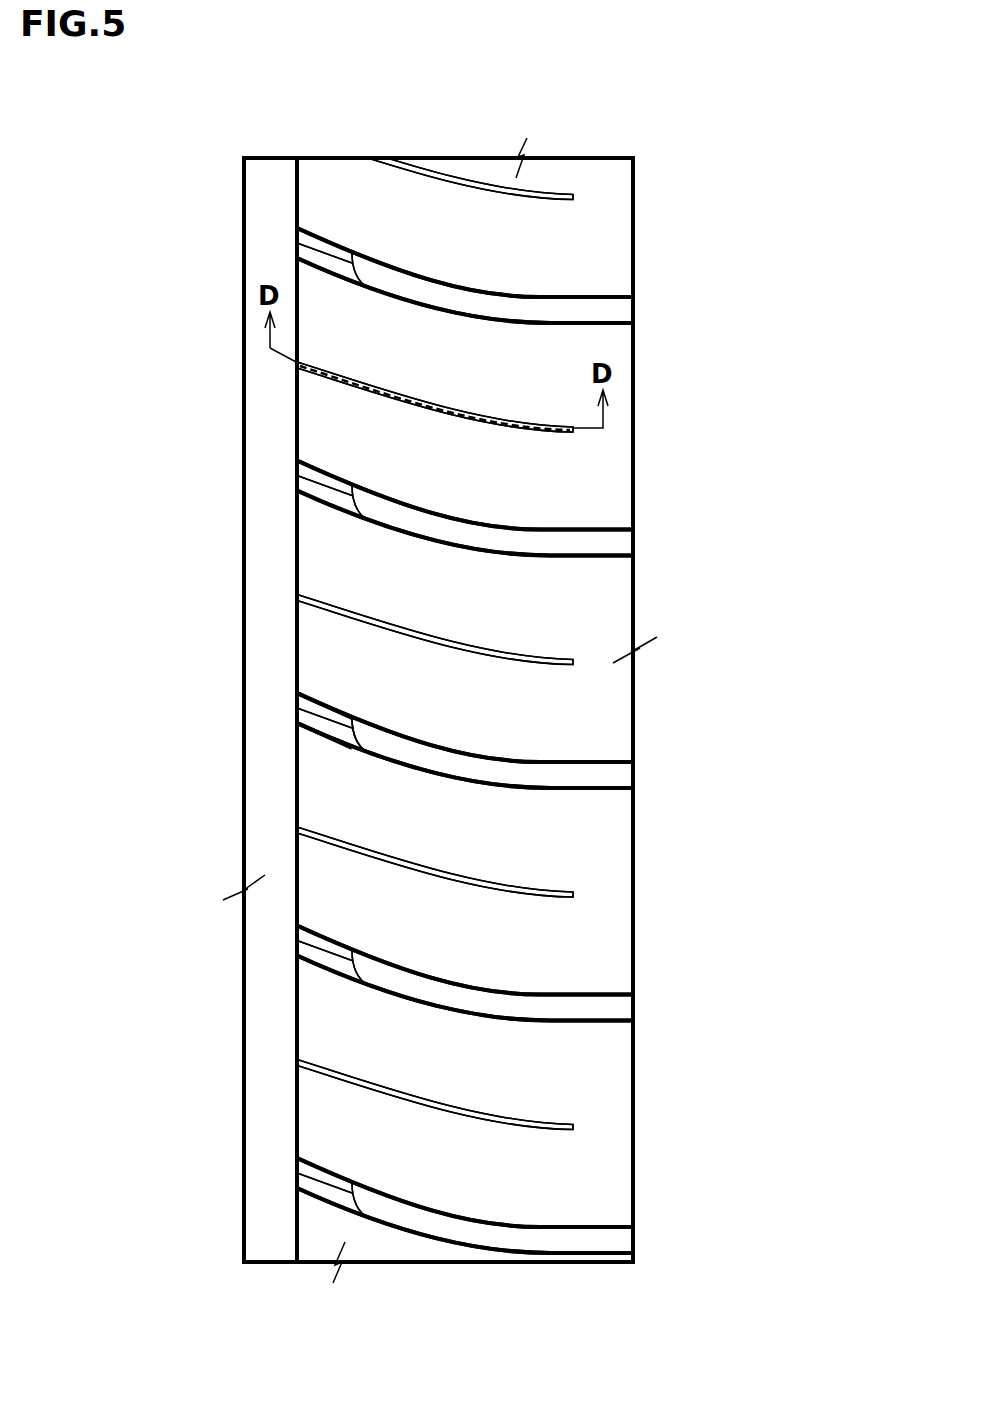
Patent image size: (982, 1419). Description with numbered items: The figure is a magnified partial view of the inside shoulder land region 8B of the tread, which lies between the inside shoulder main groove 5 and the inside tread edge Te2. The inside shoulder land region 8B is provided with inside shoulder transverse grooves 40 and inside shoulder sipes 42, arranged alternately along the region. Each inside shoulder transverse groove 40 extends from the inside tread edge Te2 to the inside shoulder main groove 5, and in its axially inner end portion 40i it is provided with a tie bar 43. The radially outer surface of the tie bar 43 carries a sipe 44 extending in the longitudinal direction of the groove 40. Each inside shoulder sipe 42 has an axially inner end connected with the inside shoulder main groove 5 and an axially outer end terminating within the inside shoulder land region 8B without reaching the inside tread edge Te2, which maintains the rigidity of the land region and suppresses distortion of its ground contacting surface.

The inside shoulder main groove 5 is at (270, 212).
The inside shoulder land region 8B is at (422, 225).
The inside tread edge Te2 is at (633, 226).
The inside shoulder transverse groove 40 is at (487, 303).
The inside shoulder sipe 42 is at (417, 398).
The axially inner end portion 40i is at (322, 697).
The tie bar 43 is at (337, 732).
The sipe 44 is at (297, 723).